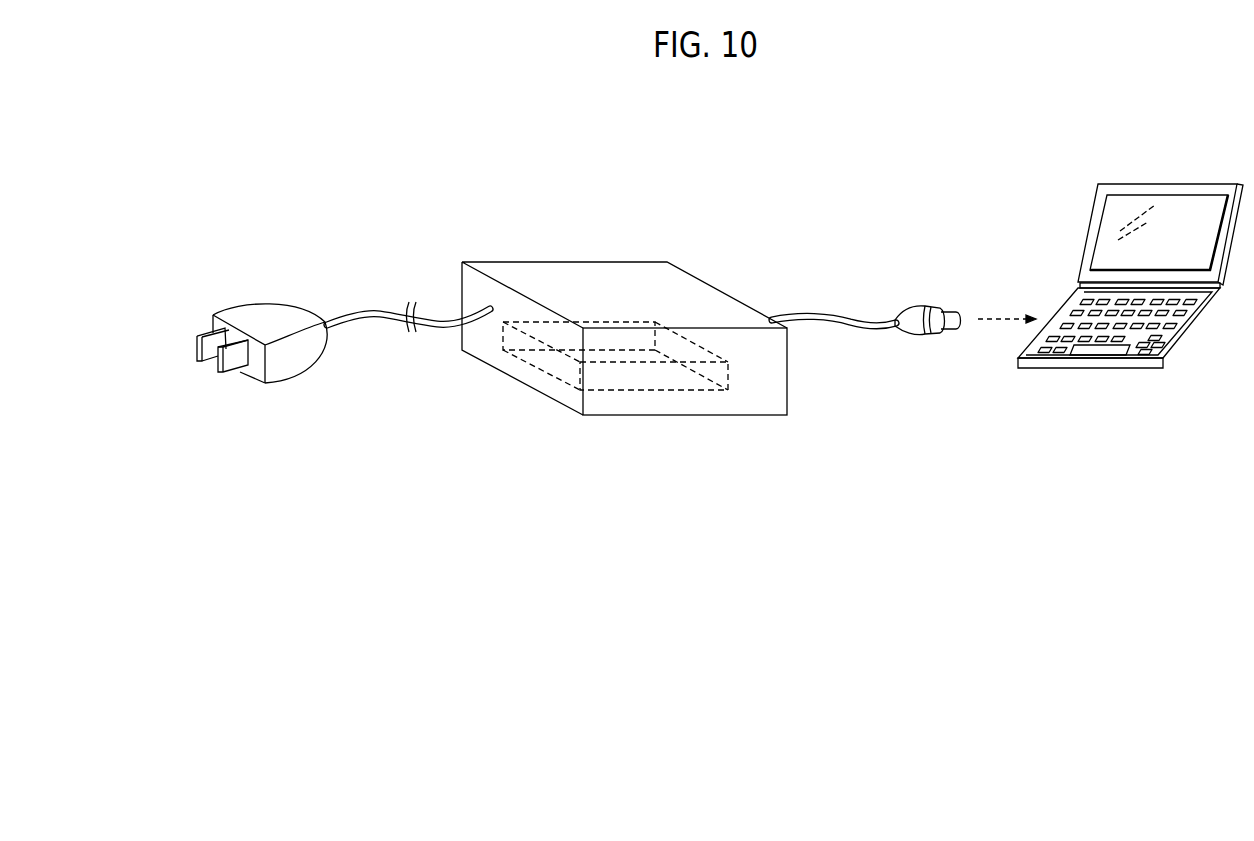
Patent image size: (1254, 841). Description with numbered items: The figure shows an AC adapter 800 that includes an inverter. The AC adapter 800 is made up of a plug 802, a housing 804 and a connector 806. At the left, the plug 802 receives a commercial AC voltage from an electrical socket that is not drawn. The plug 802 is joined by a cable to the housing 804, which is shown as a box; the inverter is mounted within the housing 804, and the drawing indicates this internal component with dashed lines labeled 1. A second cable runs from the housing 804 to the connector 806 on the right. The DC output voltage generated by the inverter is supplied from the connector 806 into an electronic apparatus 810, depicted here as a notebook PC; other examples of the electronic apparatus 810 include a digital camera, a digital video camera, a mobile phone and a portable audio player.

The AC adapter 800 is at (733, 587).
The plug 802 is at (270, 320).
The housing 804 is at (555, 262).
The power converter circuit board 1 is at (645, 375).
The connector 806 is at (915, 308).
The electronic apparatus 810 is at (1178, 182).